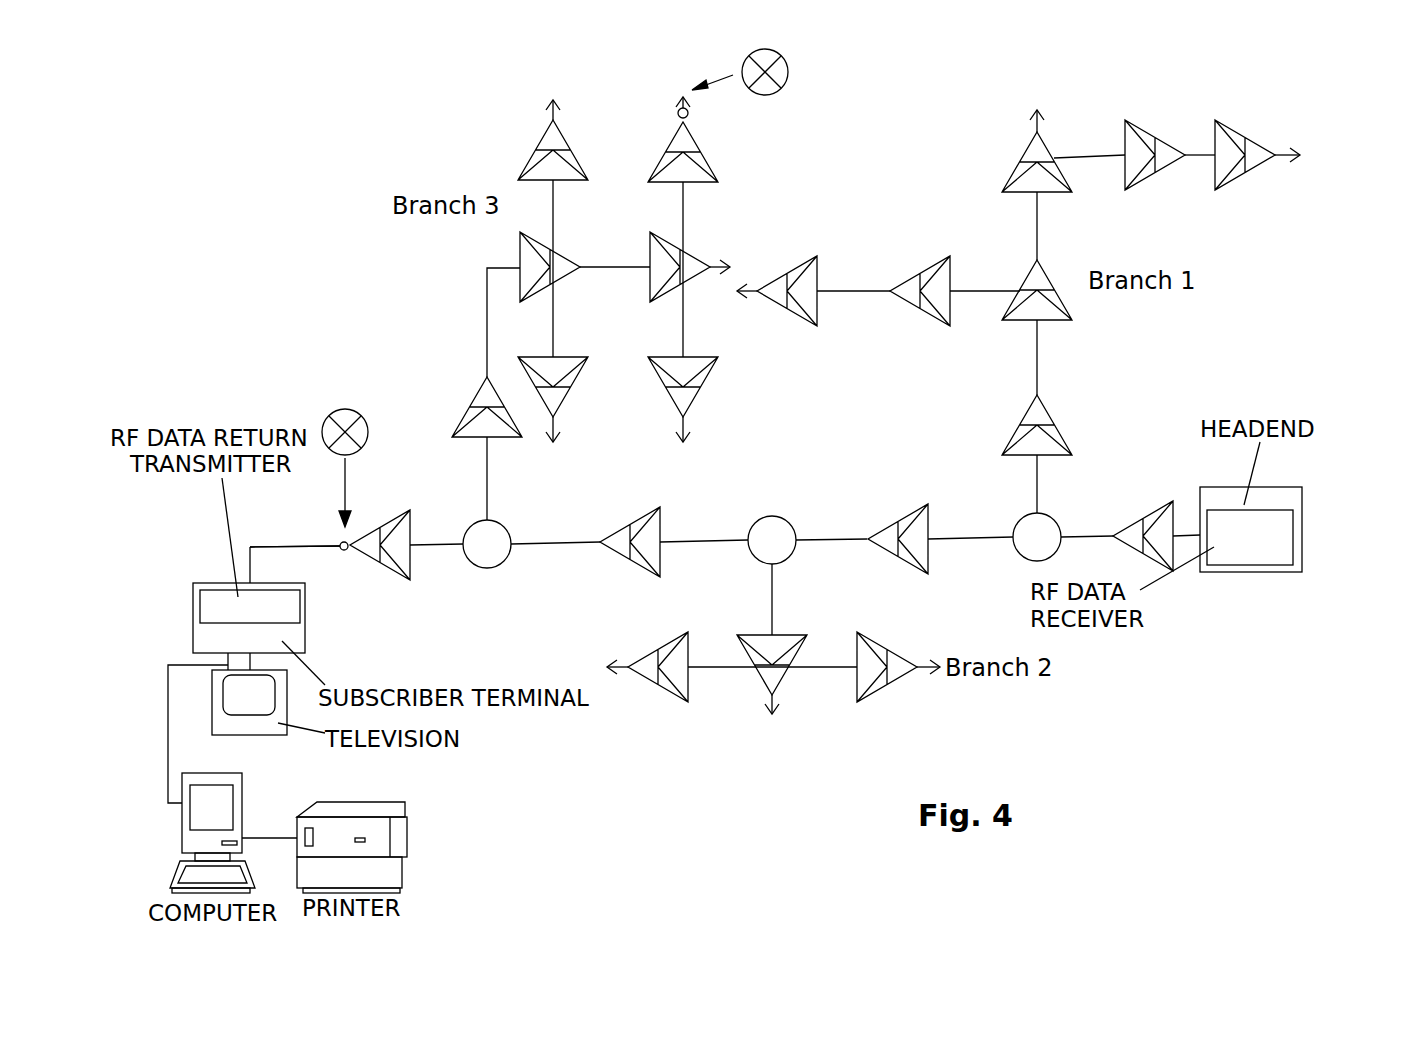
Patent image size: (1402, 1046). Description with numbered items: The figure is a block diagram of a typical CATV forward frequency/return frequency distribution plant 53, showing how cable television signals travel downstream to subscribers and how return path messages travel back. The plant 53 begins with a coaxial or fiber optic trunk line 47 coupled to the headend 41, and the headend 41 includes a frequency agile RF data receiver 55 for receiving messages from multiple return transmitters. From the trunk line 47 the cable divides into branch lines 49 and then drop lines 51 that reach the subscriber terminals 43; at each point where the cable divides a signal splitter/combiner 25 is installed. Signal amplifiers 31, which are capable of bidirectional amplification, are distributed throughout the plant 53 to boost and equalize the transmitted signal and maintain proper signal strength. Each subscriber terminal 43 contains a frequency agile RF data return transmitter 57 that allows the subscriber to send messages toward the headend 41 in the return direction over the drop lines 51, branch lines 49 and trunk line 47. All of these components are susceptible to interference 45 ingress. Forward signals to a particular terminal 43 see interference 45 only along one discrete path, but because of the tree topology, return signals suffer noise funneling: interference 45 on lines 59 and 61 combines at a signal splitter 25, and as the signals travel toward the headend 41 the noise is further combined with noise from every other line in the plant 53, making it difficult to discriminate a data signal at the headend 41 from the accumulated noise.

The signal splitter/combiner 25 is at (506, 537).
The signal amplifier 31 is at (412, 527).
The headend 41 is at (1303, 510).
The subscriber terminal 43 is at (310, 648).
The interference 45 is at (790, 63).
The trunk line 47 is at (1184, 522).
The branch line 49 is at (490, 464).
The drop line 51 is at (303, 545).
The CATV distribution plant 53 is at (296, 147).
The RF data receiver 55 is at (1295, 545).
The RF data return transmitter 57 is at (290, 619).
The line 59 is at (347, 552).
The line 61 is at (677, 114).